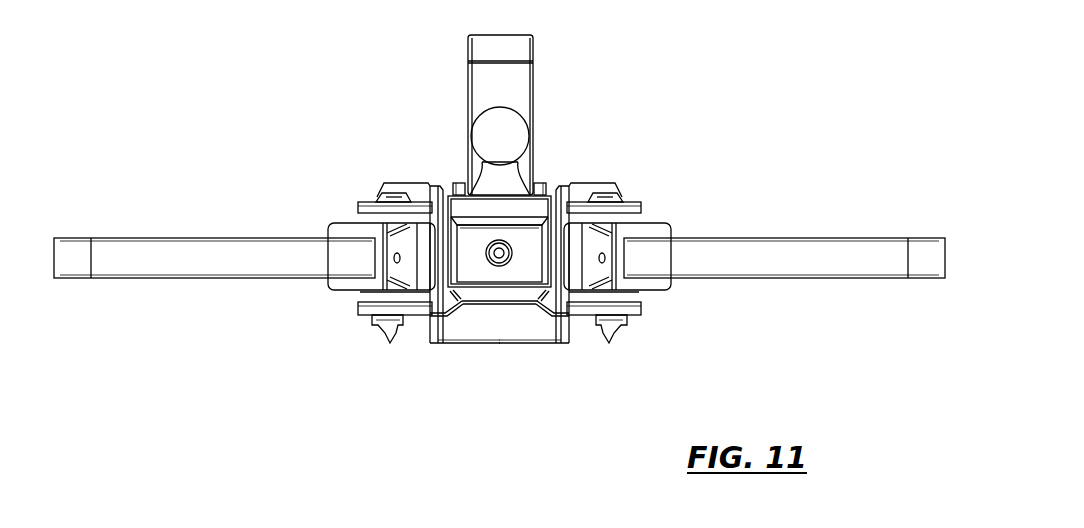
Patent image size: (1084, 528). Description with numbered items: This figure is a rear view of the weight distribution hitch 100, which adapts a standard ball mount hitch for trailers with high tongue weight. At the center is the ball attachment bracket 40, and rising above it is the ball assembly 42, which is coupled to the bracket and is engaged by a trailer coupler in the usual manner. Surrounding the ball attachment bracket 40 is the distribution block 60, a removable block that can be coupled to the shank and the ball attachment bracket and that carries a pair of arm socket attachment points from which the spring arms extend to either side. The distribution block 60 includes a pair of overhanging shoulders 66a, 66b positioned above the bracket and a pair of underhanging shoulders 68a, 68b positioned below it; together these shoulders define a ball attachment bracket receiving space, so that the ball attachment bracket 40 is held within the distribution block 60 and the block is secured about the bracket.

The weight distribution hitch 100 is at (256, 128).
The ball attachment bracket 40 is at (532, 263).
The ball assembly 42 is at (507, 137).
The distribution block 60 is at (500, 312).
The overhanging shoulder 66a is at (538, 190).
The overhanging shoulder 66b is at (463, 187).
The underhanging shoulder 68a is at (543, 292).
The underhanging shoulder 68b is at (457, 292).